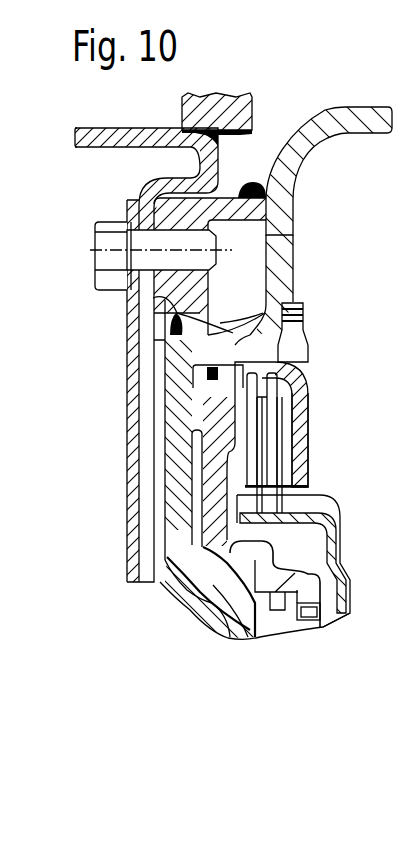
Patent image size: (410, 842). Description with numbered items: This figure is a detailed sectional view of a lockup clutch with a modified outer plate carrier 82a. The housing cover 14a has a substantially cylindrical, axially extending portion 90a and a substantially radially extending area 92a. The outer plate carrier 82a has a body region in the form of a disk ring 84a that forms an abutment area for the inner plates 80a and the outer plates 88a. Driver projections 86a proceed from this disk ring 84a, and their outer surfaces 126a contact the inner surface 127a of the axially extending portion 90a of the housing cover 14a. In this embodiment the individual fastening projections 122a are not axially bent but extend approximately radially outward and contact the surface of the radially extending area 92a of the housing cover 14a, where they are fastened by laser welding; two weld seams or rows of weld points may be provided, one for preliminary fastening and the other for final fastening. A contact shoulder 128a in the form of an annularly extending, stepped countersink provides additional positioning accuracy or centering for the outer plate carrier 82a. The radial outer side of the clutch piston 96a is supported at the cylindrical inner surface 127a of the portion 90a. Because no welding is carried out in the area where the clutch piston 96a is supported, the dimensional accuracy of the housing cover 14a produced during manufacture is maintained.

The housing cover 14a is at (396, 152).
The axially extending portion of the housing cover 90a is at (365, 186).
The radially extending area of the housing cover 92a is at (283, 287).
The contact shoulder 128a is at (375, 246).
The fastening projections 122a is at (290, 335).
The driver projections 86a is at (390, 322).
The outer plate carrier 82a is at (396, 358).
The disk ring 84a is at (263, 458).
The inner plates 80a is at (237, 495).
The outer plates 88a is at (230, 453).
The outer surface of the driver projections 126a is at (152, 328).
The inner surface of the housing cover 127a is at (205, 397).
The clutch piston 96a is at (232, 549).